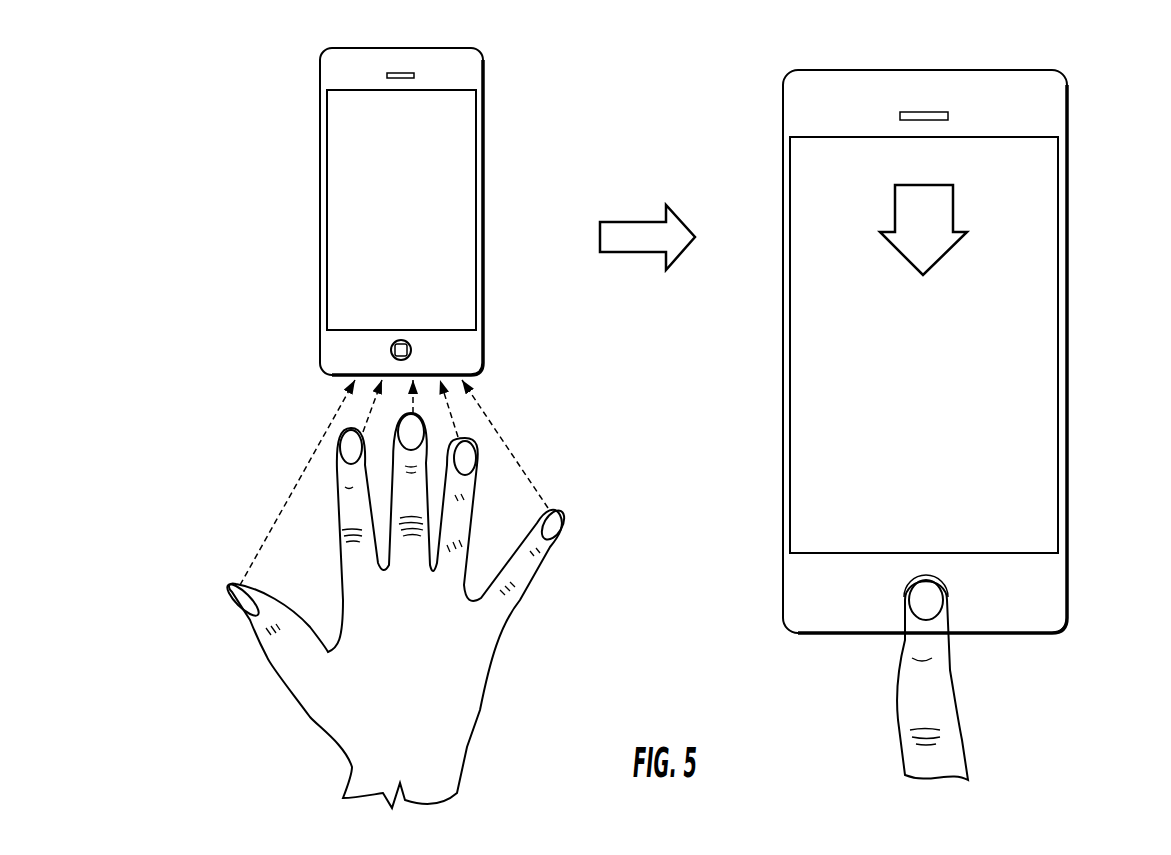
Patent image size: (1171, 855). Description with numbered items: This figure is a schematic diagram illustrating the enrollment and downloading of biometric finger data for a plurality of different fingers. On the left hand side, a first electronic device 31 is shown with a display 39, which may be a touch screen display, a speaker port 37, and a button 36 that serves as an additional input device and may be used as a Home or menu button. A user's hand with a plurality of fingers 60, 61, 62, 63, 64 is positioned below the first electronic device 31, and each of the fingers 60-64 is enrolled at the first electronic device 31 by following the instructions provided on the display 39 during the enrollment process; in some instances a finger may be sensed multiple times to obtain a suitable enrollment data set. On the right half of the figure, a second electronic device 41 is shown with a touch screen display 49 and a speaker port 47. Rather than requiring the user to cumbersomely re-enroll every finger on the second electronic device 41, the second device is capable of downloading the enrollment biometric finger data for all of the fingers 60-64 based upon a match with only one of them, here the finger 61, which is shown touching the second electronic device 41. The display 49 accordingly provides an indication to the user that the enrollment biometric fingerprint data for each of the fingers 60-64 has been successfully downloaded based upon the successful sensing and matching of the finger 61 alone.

The first electronic device 31 is at (482, 60).
The button 36 is at (412, 350).
The speaker port 37 is at (388, 76).
The display 39 is at (477, 193).
The second electronic device 41 is at (1068, 87).
The speaker port 47 is at (898, 115).
The touch screen display 49 is at (1058, 322).
The finger 60 is at (258, 630).
The finger 61 is at (337, 458).
The finger 62 is at (400, 433).
The finger 63 is at (478, 468).
The finger 64 is at (552, 543).